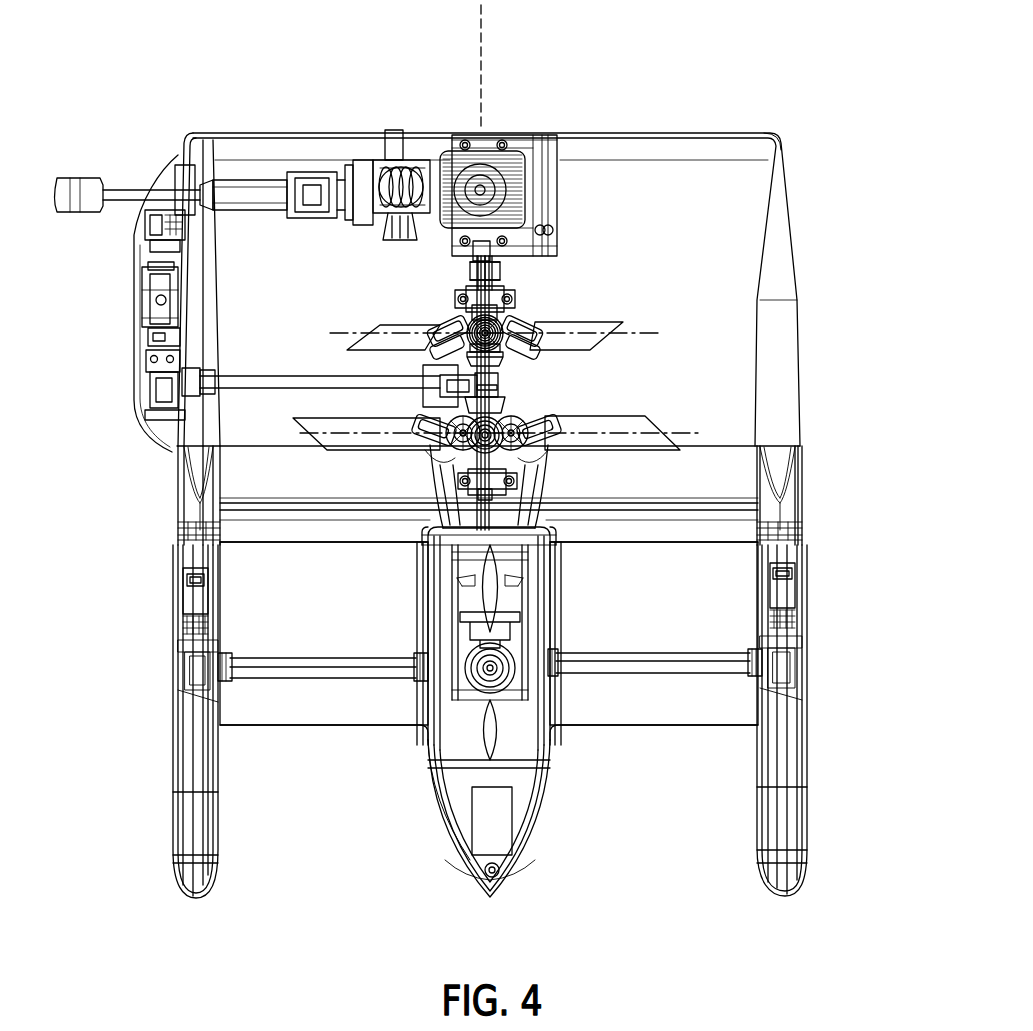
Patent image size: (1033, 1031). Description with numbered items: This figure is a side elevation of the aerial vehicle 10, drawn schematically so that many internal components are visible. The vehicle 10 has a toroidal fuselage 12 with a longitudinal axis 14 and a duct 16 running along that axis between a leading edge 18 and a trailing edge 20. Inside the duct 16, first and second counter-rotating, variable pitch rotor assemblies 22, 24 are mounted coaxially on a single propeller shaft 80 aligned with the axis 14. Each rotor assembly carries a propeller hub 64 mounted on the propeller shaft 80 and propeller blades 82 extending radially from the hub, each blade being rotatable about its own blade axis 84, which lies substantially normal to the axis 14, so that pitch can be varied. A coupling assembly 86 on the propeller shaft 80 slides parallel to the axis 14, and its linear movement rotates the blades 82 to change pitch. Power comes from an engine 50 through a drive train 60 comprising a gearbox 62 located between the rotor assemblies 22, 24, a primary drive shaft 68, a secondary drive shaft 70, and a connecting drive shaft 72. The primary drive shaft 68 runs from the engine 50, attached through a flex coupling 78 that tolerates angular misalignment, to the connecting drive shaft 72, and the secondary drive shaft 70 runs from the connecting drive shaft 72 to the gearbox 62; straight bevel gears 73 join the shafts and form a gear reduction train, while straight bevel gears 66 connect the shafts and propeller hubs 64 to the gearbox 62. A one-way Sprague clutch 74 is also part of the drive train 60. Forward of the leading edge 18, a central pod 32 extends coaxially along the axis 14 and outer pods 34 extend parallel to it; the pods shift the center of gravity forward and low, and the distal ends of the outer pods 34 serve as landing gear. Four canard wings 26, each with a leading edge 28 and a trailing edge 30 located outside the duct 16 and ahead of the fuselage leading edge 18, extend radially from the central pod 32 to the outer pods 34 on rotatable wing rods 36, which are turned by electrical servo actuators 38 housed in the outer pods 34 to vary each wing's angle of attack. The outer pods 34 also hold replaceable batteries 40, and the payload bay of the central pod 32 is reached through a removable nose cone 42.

The aerial vehicle 10 is at (703, 57).
The toroidal fuselage 12 is at (499, 267).
The longitudinal axis 14 is at (483, 44).
The duct 16 is at (718, 143).
The leading edge 18 is at (752, 512).
The trailing edge 20 is at (778, 131).
The first rotor assembly 22 is at (594, 410).
The second rotor assembly 24 is at (563, 305).
The canard wing 26 is at (305, 724).
The leading edge of canard wing 28 is at (384, 729).
The trailing edge of canard wing 30 is at (310, 526).
The central pod 32 is at (553, 754).
The outer pod 34 is at (220, 823).
The wing rod 36 is at (284, 660).
The actuator 38 is at (188, 603).
The replaceable battery 40 is at (478, 845).
The removable nose cone 42 is at (432, 810).
The engine 50 is at (506, 134).
The drive train 60 is at (230, 166).
The gearbox 62 is at (513, 380).
The propeller hub 64 is at (498, 304).
The straight bevel gears 66 is at (498, 386).
The primary drive shaft 68 is at (245, 180).
The secondary drive shaft 70 is at (245, 380).
The connecting drive shaft 72 is at (137, 263).
The straight bevel gears 73 is at (145, 213).
The one-way Sprague clutch 74 is at (148, 300).
The flex coupling 78 is at (342, 172).
The propeller shaft 80 is at (492, 272).
The propeller blade 82 is at (602, 320).
The propeller blade axis 84 is at (656, 330).
The coupling assembly 86 is at (452, 292).